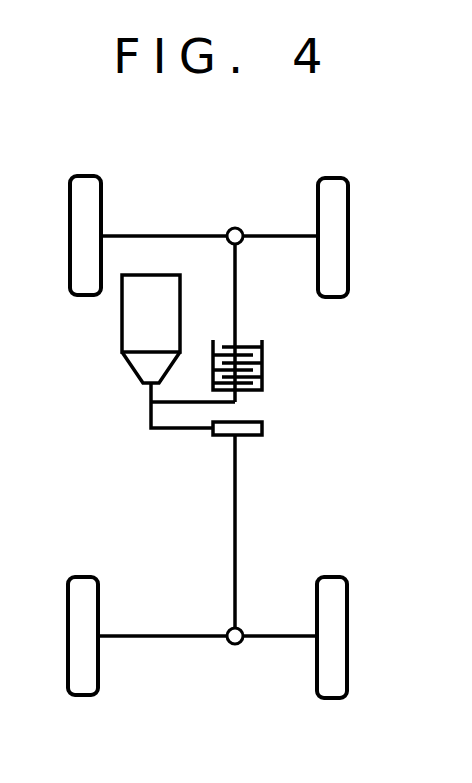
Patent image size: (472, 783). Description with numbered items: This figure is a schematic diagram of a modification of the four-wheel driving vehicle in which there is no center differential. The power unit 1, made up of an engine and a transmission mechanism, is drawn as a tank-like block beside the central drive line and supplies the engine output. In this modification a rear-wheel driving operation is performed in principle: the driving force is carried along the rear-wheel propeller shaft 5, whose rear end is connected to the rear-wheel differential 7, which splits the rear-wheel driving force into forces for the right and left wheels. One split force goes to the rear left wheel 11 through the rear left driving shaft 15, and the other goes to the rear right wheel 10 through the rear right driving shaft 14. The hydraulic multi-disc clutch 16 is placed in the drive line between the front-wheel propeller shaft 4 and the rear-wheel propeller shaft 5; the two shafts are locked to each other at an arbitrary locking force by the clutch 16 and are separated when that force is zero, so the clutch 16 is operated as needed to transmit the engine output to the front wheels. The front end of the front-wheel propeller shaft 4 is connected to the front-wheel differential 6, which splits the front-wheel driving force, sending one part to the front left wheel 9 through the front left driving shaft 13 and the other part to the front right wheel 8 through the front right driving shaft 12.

The power unit 1 is at (121, 345).
The front-wheel propeller shaft 4 is at (237, 306).
The rear-wheel propeller shaft 5 is at (237, 530).
The front-wheel differential 6 is at (236, 227).
The rear-wheel differential 7 is at (243, 632).
The front right wheel 8 is at (338, 214).
The front left wheel 9 is at (90, 182).
The rear right wheel 10 is at (348, 608).
The rear left wheel 11 is at (93, 598).
The front right driving shaft 12 is at (300, 209).
The front left driving shaft 13 is at (170, 232).
The rear right driving shaft 14 is at (270, 640).
The rear left driving shaft 15 is at (150, 640).
The hydraulic multi-disc clutch 16 is at (265, 368).